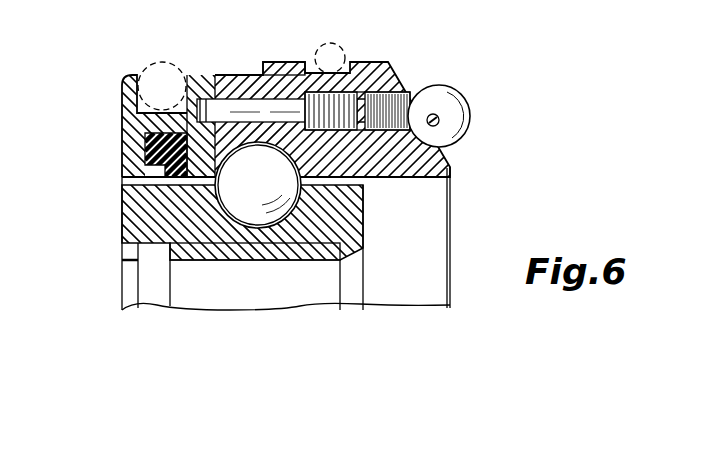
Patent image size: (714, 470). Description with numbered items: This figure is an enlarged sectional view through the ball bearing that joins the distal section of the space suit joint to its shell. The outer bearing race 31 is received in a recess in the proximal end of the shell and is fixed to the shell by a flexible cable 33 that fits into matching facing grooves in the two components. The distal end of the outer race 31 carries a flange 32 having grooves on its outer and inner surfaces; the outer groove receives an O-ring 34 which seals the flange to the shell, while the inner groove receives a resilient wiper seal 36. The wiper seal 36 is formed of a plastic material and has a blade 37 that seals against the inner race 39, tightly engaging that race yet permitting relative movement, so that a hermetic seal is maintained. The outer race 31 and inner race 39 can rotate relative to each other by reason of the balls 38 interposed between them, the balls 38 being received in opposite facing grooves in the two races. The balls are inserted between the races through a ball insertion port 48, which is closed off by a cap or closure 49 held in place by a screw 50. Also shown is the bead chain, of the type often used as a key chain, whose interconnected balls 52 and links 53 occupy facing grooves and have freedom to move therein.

The outer bearing race 31 is at (452, 163).
The flange 32 is at (138, 121).
The flexible cable 33 is at (337, 40).
The O-ring 34 is at (150, 65).
The resilient wiper seal 36 is at (137, 152).
The blade 37 is at (122, 199).
The balls 38 is at (275, 189).
The inner race 39 is at (257, 250).
The ball insertion port 48 is at (290, 64).
The cap or closure 49 is at (263, 62).
The screw 50 is at (347, 92).
The balls 52 is at (467, 110).
The links 53 is at (436, 116).